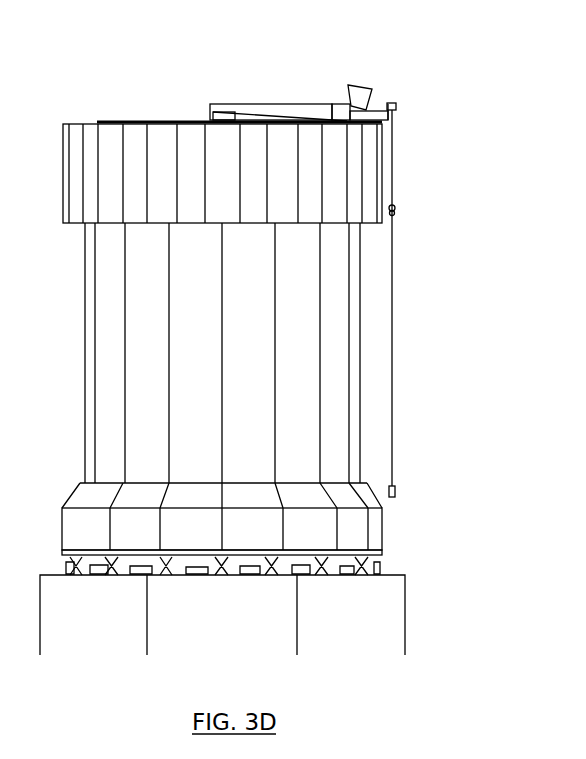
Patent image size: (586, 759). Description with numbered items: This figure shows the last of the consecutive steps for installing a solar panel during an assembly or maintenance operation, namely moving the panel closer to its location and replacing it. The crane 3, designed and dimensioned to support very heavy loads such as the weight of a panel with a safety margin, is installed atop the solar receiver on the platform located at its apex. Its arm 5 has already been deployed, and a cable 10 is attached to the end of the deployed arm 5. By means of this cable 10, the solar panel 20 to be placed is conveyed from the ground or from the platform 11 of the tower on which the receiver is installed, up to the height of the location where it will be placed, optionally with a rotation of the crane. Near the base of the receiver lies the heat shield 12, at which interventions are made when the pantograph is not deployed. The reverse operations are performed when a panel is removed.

The crane 3 is at (227, 103).
The arm of the crane 5 is at (378, 101).
The cable 10 is at (392, 173).
The platform 11 is at (405, 577).
The heat shield 12 is at (377, 528).
The solar panel 20 is at (392, 330).